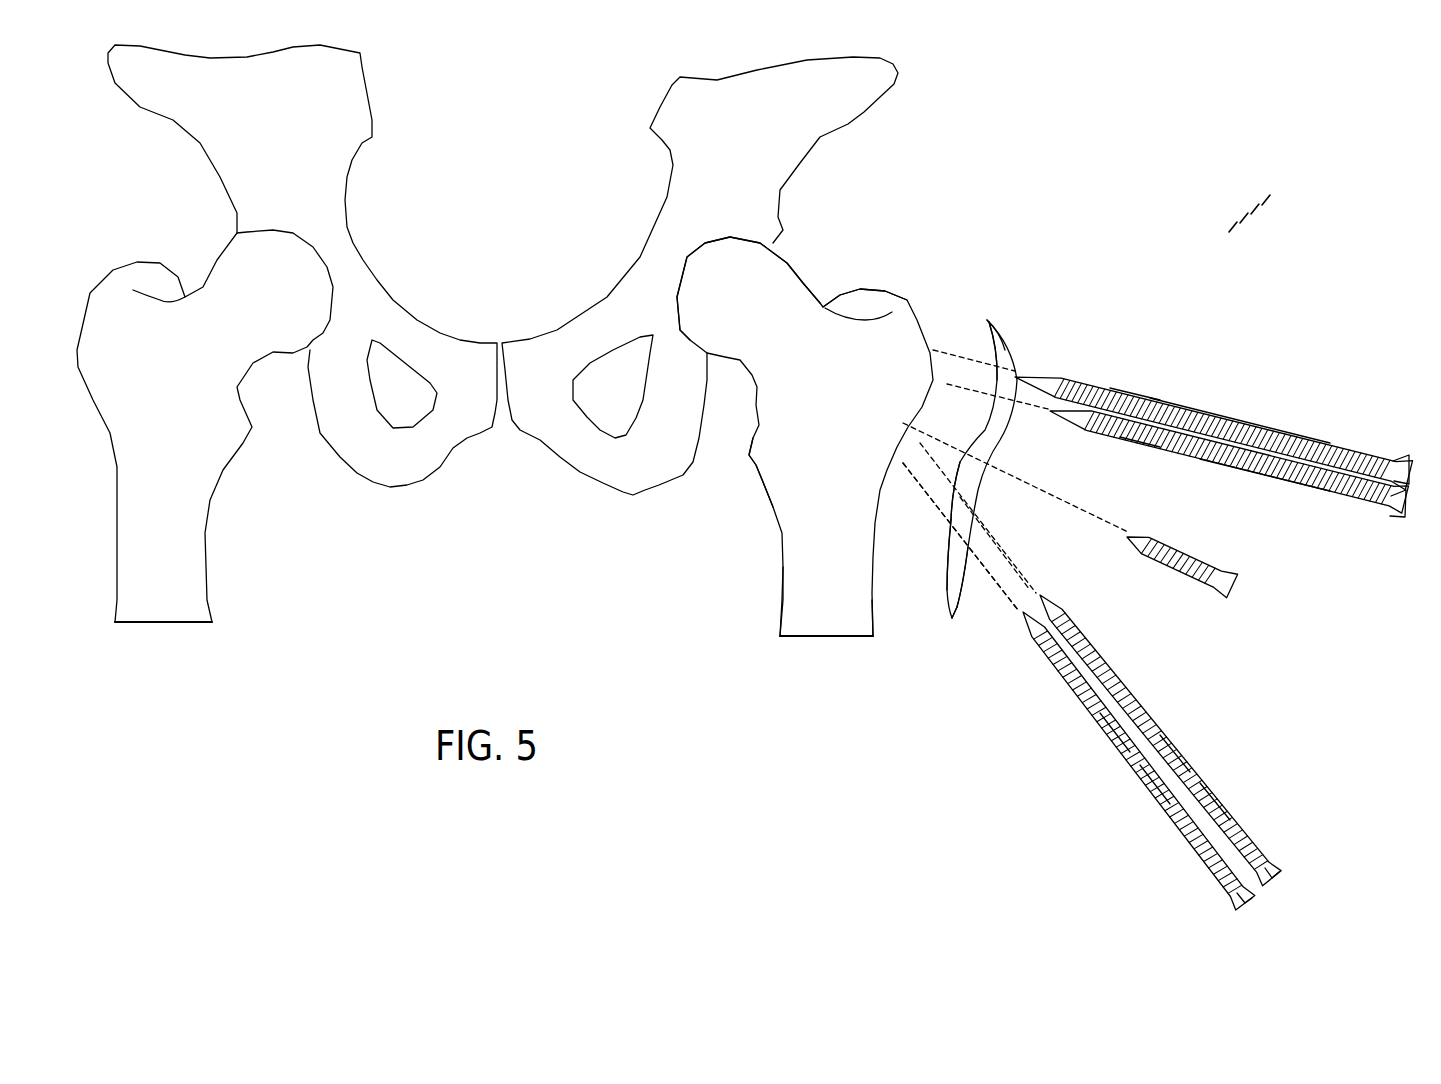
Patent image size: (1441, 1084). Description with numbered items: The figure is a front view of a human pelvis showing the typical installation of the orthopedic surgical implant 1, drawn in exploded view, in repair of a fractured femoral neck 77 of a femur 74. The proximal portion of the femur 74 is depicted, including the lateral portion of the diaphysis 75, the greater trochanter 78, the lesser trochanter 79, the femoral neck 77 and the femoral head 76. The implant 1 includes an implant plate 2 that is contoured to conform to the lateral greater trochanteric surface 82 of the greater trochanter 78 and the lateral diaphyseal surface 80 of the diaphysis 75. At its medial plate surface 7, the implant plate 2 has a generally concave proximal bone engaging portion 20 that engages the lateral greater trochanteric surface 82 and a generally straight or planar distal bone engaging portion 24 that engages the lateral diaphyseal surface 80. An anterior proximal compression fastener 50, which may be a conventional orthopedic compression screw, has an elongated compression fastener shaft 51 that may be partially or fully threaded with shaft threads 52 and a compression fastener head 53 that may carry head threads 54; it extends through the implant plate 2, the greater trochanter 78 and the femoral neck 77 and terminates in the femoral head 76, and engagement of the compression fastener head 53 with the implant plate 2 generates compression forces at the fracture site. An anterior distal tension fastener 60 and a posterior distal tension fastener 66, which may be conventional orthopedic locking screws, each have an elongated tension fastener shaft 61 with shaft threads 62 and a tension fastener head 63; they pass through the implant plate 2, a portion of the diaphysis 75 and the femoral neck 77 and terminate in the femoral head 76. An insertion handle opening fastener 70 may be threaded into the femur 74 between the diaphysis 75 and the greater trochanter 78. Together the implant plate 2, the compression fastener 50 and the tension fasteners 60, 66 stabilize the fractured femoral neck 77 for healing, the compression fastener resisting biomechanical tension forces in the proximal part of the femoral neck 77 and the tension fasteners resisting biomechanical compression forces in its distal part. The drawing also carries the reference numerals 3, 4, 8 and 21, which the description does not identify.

The orthopedic surgical implant 1 is at (1237, 216).
The implant plate 2 is at (1010, 328).
The sheath opening 3 is at (987, 320).
The distal tip of sheath 4 is at (950, 622).
The medial plate surface 7 is at (920, 600).
The guide track 8 is at (984, 502).
The proximal bone engaging portion 20 is at (987, 337).
The sheath lumen 21 is at (958, 440).
The distal bone engaging portion 24 is at (945, 563).
The anterior proximal compression fastener 50 is at (1193, 396).
The compression fastener shaft 51 is at (1280, 433).
The shaft threads 52 is at (1176, 362).
The compression fastener head 53 is at (1420, 462).
The head threads 54 is at (1278, 469).
The anterior distal tension fastener 60 is at (1094, 708).
The tension fastener shaft 61 is at (1110, 752).
The shaft threads 62 is at (1170, 788).
The tension fastener head 63 is at (1245, 908).
The posterior distal tension fastener 66 is at (1148, 708).
The insertion handle opening fastener 70 is at (1202, 568).
The femur 74 is at (784, 562).
The diaphysis 75 is at (800, 600).
The femoral head 76 is at (728, 252).
The femoral neck 77 is at (790, 317).
The greater trochanter 78 is at (900, 312).
The lesser trochanter 79 is at (756, 455).
The lateral diaphyseal surface 80 is at (874, 625).
The lateral greater trochanteric surface 82 is at (910, 327).